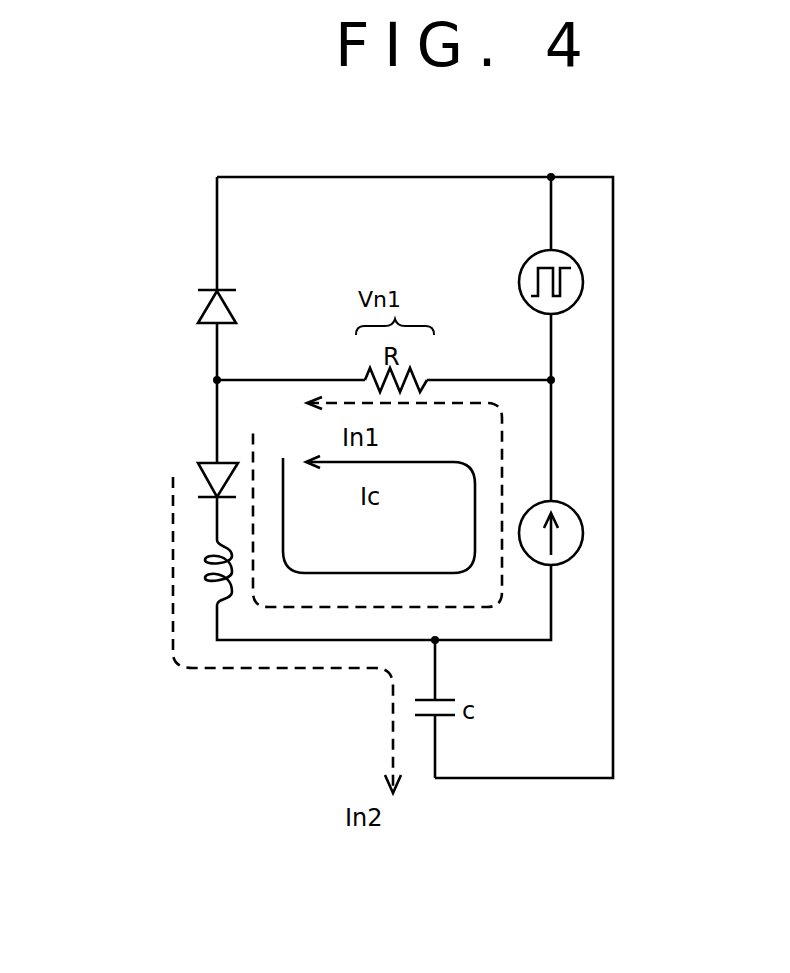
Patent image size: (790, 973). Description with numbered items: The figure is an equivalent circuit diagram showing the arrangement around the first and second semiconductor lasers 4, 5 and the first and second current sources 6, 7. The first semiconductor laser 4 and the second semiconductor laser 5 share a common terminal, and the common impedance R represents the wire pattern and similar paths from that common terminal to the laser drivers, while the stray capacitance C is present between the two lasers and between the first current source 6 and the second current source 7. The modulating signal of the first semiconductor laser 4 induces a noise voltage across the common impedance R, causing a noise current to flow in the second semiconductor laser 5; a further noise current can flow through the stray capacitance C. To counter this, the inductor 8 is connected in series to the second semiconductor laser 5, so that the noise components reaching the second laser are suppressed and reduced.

The first semiconductor laser 4 is at (205, 305).
The second semiconductor laser 5 is at (200, 467).
The first current source 6 is at (583, 282).
The second current source 7 is at (584, 537).
The inductor 8 is at (205, 583).